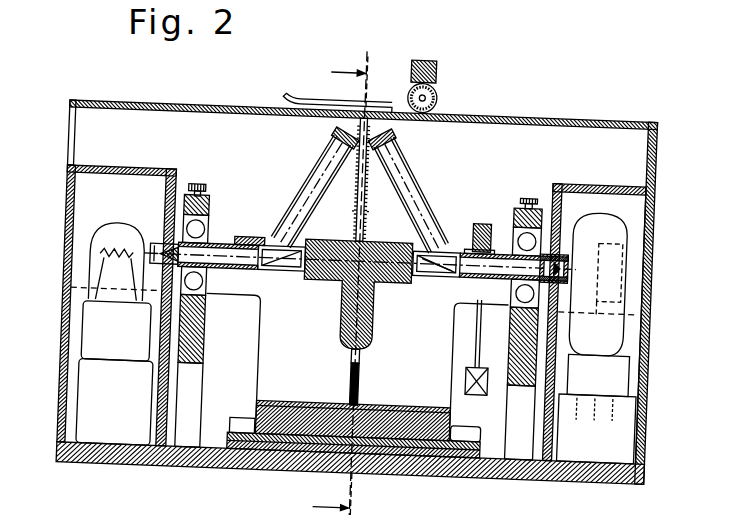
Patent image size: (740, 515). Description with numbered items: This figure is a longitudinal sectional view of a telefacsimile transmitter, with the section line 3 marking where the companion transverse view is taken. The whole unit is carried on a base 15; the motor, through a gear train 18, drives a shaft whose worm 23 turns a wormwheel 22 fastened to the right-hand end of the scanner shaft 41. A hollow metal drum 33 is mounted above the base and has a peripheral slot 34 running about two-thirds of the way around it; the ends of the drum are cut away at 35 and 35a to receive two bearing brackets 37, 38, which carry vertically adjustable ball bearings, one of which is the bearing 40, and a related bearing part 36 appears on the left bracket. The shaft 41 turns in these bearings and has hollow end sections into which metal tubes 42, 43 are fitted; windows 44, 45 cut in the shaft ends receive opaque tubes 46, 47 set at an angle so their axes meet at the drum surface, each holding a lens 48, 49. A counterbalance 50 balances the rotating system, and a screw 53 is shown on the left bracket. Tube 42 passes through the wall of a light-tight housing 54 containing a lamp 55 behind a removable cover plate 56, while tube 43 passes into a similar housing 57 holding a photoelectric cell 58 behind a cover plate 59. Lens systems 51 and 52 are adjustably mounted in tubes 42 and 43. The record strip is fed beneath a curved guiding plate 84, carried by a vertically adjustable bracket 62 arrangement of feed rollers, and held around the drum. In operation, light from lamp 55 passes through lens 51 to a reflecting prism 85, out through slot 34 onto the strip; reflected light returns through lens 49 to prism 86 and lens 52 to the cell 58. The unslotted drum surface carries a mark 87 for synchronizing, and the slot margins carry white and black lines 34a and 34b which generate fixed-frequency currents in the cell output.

The section line 3- 3 is at (340, 280).
The base 15 is at (190, 470).
The gear train 18 is at (477, 364).
The wormwheel 22 is at (489, 210).
The worm 23 is at (471, 234).
The hollow metal drum 33 is at (576, 100).
The peripheral slot 34 is at (370, 112).
The white and black lines 34a is at (384, 222).
The white and black lines 34b is at (337, 222).
The cut-away end of drum 35 is at (205, 405).
The cut-away end of drum 35a is at (500, 416).
The ball bearing 36 is at (213, 224).
The bearing bracket 37 is at (210, 332).
The bearing bracket 38 is at (523, 320).
The ball bearing 40 is at (522, 285).
The shaft 41 is at (336, 258).
The hollow metal tube 42 is at (205, 263).
The hollow metal tube 43 is at (444, 253).
The window 44 is at (287, 262).
The window 45 is at (427, 256).
The opaque tube 46 is at (304, 186).
The opaque tube 47 is at (428, 182).
The lens 48 is at (333, 130).
The lens 49 is at (400, 128).
The counterbalance 50 is at (356, 322).
The lens system 51 is at (186, 244).
The lens system 52 is at (566, 240).
The screw 53 is at (199, 178).
The light-tight housing 54 is at (122, 174).
The lamp 55 is at (140, 254).
The removable cover plate 56 is at (72, 350).
The light-tight housing 57 is at (600, 170).
The photoelectric cell 58 is at (612, 222).
The removable cover plate 59 is at (660, 313).
The bracket 62 is at (436, 55).
The curved guiding plate 84 is at (284, 88).
The mirror or reflecting prism 85 is at (266, 291).
The mirror or reflecting prism 86 is at (452, 267).
The black or white mark 87 is at (360, 376).